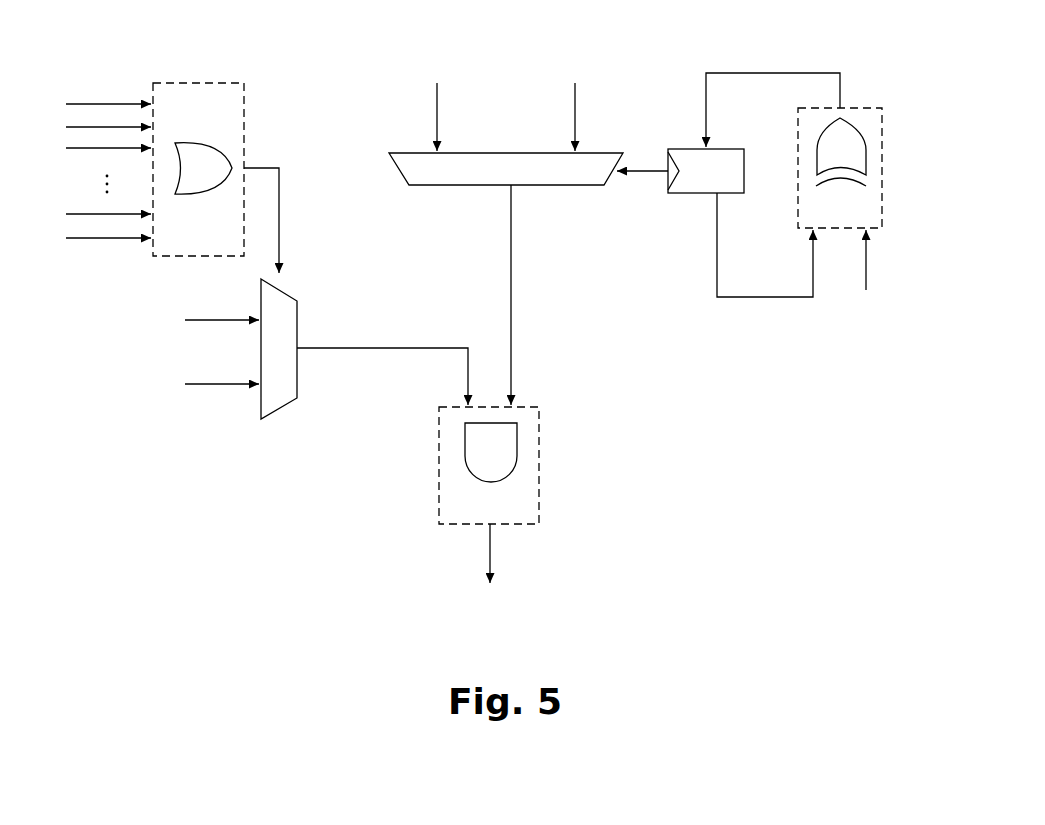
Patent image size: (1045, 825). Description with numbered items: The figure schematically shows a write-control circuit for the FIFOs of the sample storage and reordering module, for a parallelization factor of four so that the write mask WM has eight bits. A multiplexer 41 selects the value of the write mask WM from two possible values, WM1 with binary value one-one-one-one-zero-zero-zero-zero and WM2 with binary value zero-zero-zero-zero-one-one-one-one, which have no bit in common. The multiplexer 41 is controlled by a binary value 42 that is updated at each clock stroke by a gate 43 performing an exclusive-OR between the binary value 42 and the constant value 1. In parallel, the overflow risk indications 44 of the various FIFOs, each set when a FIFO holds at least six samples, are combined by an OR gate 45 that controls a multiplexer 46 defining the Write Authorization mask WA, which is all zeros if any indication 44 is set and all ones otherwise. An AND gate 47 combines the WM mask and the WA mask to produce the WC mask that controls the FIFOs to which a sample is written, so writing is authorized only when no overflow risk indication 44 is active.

The overflow risk indication 44 is at (48, 90).
The OR gate 45 is at (187, 83).
The multiplexer 46 is at (282, 409).
The multiplexer 41 is at (577, 186).
The binary value 42 is at (691, 194).
The XOR gate 43 is at (882, 195).
The constant input 1 is at (866, 277).
The AND gate 47 is at (539, 470).